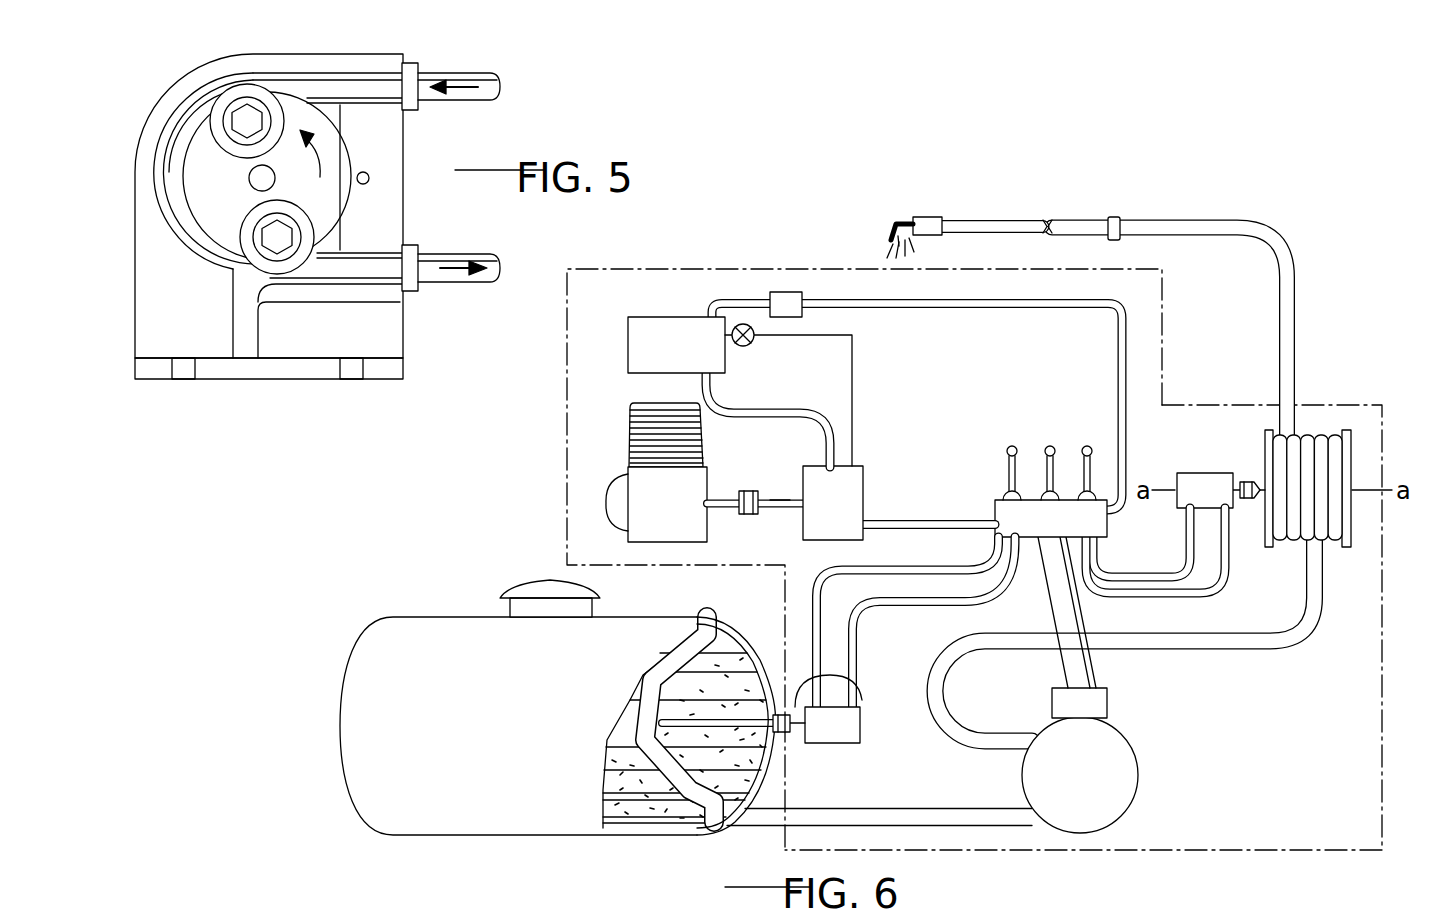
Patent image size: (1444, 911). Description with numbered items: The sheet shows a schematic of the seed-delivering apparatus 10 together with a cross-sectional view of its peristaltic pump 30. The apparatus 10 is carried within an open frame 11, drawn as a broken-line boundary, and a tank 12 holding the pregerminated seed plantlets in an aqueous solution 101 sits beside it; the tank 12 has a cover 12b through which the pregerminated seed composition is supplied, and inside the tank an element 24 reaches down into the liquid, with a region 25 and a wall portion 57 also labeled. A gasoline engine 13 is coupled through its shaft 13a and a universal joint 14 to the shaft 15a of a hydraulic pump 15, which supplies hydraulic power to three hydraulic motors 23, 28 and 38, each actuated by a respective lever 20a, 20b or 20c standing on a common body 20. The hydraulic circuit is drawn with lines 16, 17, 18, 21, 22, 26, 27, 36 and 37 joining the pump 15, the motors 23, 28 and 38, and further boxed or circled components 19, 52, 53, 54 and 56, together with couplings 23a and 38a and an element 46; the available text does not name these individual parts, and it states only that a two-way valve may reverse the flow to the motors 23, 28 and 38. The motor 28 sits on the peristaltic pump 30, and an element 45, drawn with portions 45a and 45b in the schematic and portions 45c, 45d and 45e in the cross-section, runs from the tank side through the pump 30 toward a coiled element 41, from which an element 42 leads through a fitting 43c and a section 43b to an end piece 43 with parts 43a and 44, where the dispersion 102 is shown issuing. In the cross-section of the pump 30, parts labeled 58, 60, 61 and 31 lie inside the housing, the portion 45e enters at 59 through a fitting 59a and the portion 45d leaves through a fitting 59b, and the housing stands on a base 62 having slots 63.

In FIG. 6, the apparatus 10 is at (1390, 415).
In FIG. 6, the open frame 11 is at (1390, 670).
In FIG. 6, the tank 12 is at (630, 642).
In FIG. 6, the cover 12b is at (540, 590).
In FIG. 6, the gasoline engine 13 is at (692, 485).
In FIG. 6, the shaft 13a is at (716, 512).
In FIG. 6, the universal joint 14 is at (754, 479).
In FIG. 6, the hydraulic pump 15 is at (848, 500).
In FIG. 6, the shaft 15a is at (778, 500).
In FIG. 6, the supply line 16 is at (795, 410).
In FIG. 6, the return line 17 is at (948, 310).
In FIG. 6, the pump outlet line 18 is at (942, 520).
In FIG. 6, the reservoir 19 is at (674, 318).
In FIG. 6, the manifold 20 is at (1017, 470).
In FIG. 6, the lever 20a is at (1012, 446).
In FIG. 6, the lever 20b is at (1050, 446).
In FIG. 6, the lever 20c is at (1087, 446).
In FIG. 6, the line 21 is at (857, 565).
In FIG. 6, the line 22 is at (860, 645).
In FIG. 6, the hydraulic motor 23 is at (840, 727).
In FIG. 6, the coupling 23a is at (800, 745).
In FIG. 6, the suction tube 24 is at (652, 672).
In FIG. 6, the liquid 25 is at (645, 812).
In FIG. 6, the line 26 is at (1050, 603).
In FIG. 6, the line 27 is at (1082, 604).
In FIG. 6, the hydraulic motor 28 is at (1108, 706).
In FIG. 5, the peristaltic pump 30 is at (412, 136).
In FIG. 6, the peristaltic pump 30 is at (1140, 776).
In FIG. 5, the rotor pin 31 is at (275, 181).
In FIG. 6, the line 36 is at (1177, 600).
In FIG. 6, the line 37 is at (1145, 575).
In FIG. 6, the hydraulic motor 38 is at (1215, 472).
In FIG. 6, the coupling 38a is at (1236, 510).
In FIG. 6, the hose reel 41 is at (1355, 428).
In FIG. 6, the hose 42 is at (1215, 222).
In FIG. 6, the nozzle 43 is at (925, 216).
In FIG. 6, the nozzle outlet 43a is at (912, 250).
In FIG. 6, the hose section 43b is at (1015, 220).
In FIG. 6, the hose fitting 43c is at (1114, 216).
In FIG. 6, the nozzle tip 44 is at (895, 216).
In FIG. 5, the pump tube 45 is at (500, 90).
In FIG. 6, the pump tube 45 is at (940, 835).
In FIG. 6, the tube inlet section 45a is at (900, 806).
In FIG. 5, the tube outlet section 45b is at (482, 262).
In FIG. 6, the tube outlet section 45b is at (1215, 643).
In FIG. 5, the tube arcuate section 45c is at (182, 232).
In FIG. 5, the tube exit section 45d is at (250, 280).
In FIG. 5, the tube entry section 45e is at (225, 68).
In FIG. 6, the reel shaft 46 is at (1250, 478).
In FIG. 6, the valve 52 is at (738, 348).
In FIG. 6, the line 53 is at (853, 400).
In FIG. 6, the filter 54 is at (786, 290).
In FIG. 6, the valve actuator 56 is at (856, 683).
In FIG. 6, the tank end cap 57 is at (748, 630).
In FIG. 5, the rotor 58 is at (236, 195).
In FIG. 5, the housing inlet 59 is at (375, 60).
In FIG. 5, the inlet fitting 59a is at (420, 72).
In FIG. 5, the outlet fitting 59b is at (413, 246).
In FIG. 5, the roller 60 is at (284, 262).
In FIG. 5, the roller 61 is at (215, 121).
In FIG. 5, the base 62 is at (255, 385).
In FIG. 5, the mounting slot 63 is at (182, 381).
In FIG. 6, the aqueous solution 101 is at (757, 780).
In FIG. 6, the dispersion 102 is at (890, 243).